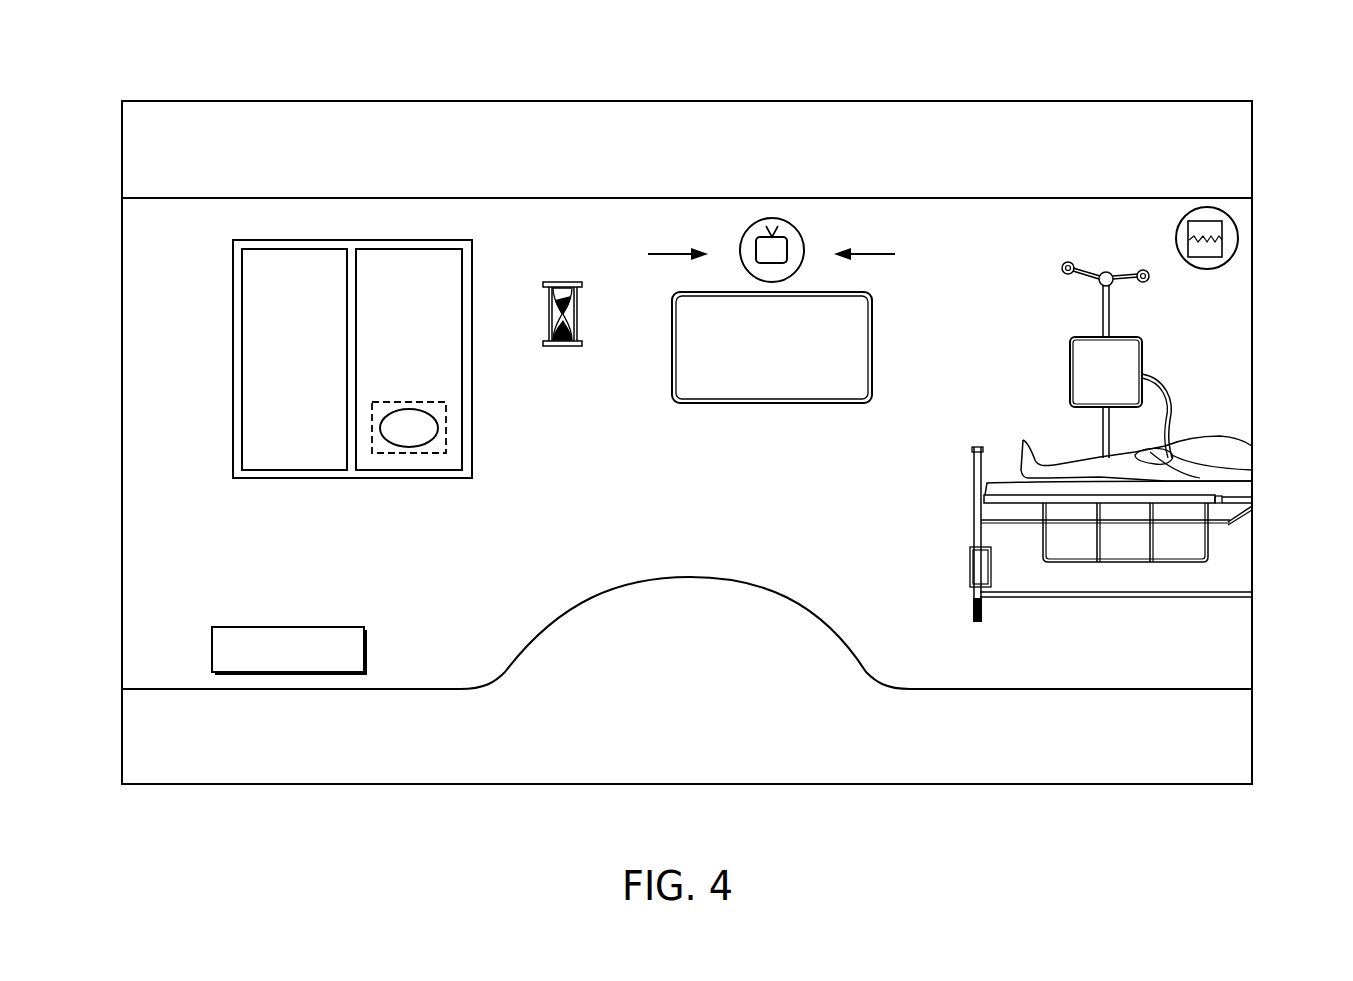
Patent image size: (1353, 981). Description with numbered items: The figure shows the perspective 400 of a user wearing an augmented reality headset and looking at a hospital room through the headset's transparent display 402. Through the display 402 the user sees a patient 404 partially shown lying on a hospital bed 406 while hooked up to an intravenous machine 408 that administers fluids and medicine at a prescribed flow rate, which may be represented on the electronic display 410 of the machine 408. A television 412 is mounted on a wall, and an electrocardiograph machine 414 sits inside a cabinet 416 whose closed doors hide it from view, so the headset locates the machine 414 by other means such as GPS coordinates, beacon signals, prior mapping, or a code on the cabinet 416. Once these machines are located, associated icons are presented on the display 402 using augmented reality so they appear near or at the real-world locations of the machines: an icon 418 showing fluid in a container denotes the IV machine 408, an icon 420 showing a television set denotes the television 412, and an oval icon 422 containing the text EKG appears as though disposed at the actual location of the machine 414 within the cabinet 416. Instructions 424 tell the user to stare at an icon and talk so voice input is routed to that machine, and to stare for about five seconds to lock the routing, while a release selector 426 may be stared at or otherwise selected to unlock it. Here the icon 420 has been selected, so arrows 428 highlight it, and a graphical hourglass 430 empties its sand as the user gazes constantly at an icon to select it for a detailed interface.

The perspective 400 is at (1224, 83).
The transparent display 402 is at (1253, 638).
The patient 404 is at (1022, 440).
The hospital bed 406 is at (1118, 598).
The intravenous (IV) machine 408 is at (1132, 312).
The electronic display 410 is at (1070, 373).
The television 412 is at (797, 362).
The electrocardiograph (EKG) machine 414 is at (409, 402).
The cabinet 416 is at (304, 289).
The icon 418 is at (1176, 240).
The icon 420 is at (775, 218).
The icon 422 is at (408, 447).
The instructions 424 is at (205, 527).
The release selector 426 is at (212, 650).
The graphical elements 428 is at (668, 252).
The graphical hourglass 430 is at (562, 348).